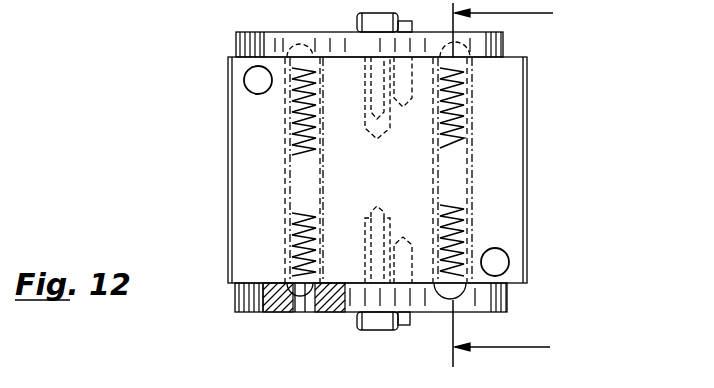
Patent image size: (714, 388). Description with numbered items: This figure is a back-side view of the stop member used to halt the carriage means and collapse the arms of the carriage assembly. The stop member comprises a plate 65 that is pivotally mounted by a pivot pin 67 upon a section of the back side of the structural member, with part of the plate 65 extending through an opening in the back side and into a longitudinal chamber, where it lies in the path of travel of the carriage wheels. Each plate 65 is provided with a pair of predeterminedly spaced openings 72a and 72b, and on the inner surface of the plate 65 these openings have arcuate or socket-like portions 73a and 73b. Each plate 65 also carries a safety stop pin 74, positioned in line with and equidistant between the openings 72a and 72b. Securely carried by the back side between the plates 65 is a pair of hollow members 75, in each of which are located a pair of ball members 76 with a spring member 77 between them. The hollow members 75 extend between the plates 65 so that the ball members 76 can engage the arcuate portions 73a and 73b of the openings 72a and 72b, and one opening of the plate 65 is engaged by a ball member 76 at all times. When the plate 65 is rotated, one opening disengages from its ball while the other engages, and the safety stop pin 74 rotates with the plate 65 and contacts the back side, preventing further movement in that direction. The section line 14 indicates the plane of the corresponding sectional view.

The section line 14- 14 is at (527, 187).
The plate 65 is at (236, 34).
The pivot pin 67 is at (357, 16).
The opening 72a is at (455, 305).
The opening 72b is at (306, 34).
The arcuate portion 73a is at (505, 44).
The arcuate portion 73b is at (236, 44).
The safety stop pin 74 is at (404, 32).
The hollow member 75 is at (323, 164).
The ball member 76 is at (318, 68).
The spring member 77 is at (287, 144).